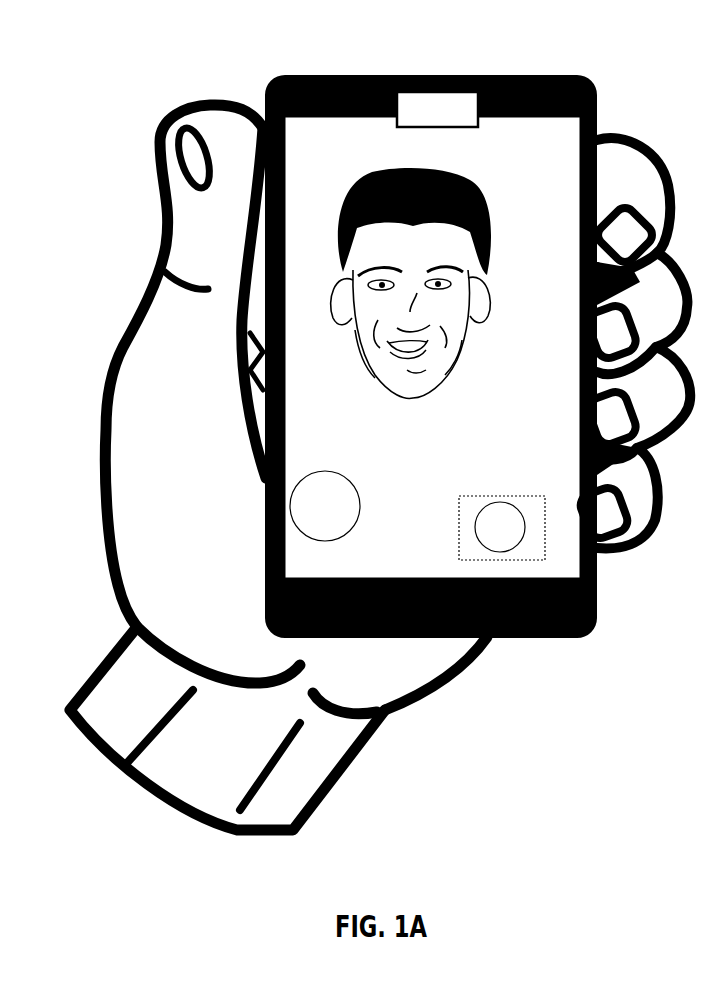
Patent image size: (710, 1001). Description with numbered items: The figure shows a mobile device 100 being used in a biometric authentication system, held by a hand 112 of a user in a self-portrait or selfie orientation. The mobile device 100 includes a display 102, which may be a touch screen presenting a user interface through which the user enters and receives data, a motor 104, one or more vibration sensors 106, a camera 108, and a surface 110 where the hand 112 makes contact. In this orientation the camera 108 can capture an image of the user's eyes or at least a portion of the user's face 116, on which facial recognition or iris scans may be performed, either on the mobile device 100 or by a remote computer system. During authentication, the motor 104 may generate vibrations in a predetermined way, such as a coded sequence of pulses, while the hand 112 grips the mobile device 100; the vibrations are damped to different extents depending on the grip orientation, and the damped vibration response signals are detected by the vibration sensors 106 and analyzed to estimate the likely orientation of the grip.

The mobile device 100 is at (356, 425).
The display 102 is at (333, 122).
The motor 104 is at (298, 488).
The vibration sensors 106 is at (500, 503).
The camera 108 is at (398, 80).
The surface 110 is at (268, 512).
The hand 112 is at (115, 347).
The face 116 is at (467, 203).